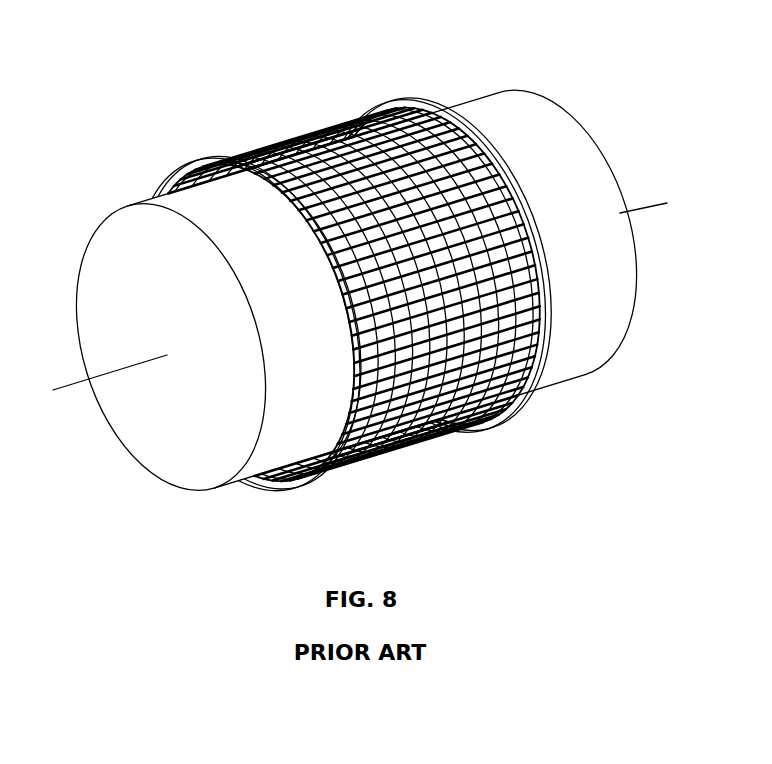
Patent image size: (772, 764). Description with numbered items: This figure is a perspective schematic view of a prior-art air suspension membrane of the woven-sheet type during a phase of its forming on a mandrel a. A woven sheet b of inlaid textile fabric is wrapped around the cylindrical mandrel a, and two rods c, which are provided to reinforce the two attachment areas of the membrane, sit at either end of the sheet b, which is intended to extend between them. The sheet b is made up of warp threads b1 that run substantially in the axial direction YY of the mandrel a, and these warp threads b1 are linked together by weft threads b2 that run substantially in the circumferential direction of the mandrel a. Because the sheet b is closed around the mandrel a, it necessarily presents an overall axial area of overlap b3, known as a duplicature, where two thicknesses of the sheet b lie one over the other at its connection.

The mandrel a is at (586, 390).
The woven sheet b is at (382, 264).
The rods c is at (208, 146).
The warp threads b1 is at (296, 239).
The weft threads b2 is at (323, 262).
The axial area of overlap b3 is at (275, 201).
The axial direction YY is at (72, 380).